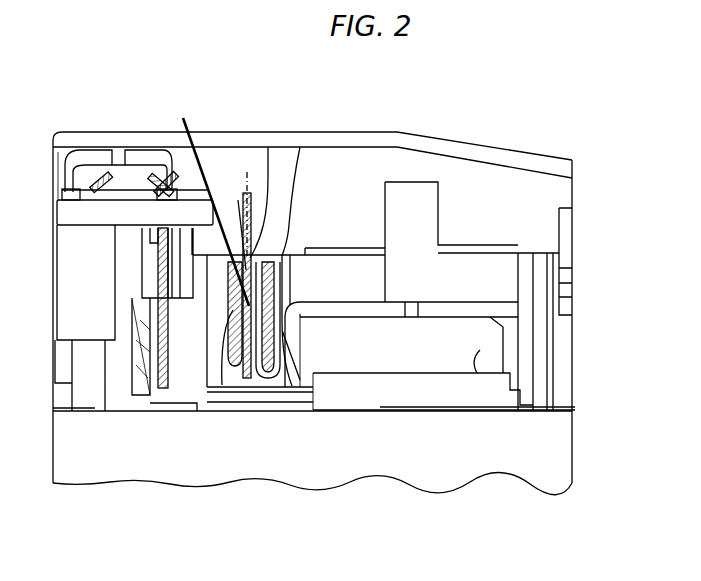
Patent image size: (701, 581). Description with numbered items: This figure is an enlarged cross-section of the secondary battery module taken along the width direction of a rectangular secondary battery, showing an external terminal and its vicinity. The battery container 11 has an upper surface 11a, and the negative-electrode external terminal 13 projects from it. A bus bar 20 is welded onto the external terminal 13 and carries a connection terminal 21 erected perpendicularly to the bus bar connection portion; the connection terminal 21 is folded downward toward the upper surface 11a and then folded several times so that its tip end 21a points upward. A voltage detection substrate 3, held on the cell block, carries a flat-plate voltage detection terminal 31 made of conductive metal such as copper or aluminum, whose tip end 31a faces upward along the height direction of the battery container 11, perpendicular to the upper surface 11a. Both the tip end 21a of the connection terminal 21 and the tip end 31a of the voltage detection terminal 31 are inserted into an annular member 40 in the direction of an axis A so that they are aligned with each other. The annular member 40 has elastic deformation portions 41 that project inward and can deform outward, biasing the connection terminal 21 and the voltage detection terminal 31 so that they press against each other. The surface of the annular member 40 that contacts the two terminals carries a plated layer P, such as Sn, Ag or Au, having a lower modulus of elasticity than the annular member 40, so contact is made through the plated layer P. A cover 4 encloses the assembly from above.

The voltage detection substrate 3 is at (80, 157).
The cover 4 is at (478, 146).
The battery container 11 is at (473, 471).
The upper surface of the battery container 11a is at (477, 375).
The negative-electrode external terminal 13 is at (375, 368).
The bus bar 20 is at (355, 297).
The connection terminal 21 is at (246, 380).
The tip end of the connection terminal 21a is at (268, 147).
The voltage detection terminal 31 is at (150, 405).
The tip end of the voltage detection terminal 31a is at (238, 200).
The annular member 40 is at (300, 147).
The elastic deformation portion 41 is at (210, 403).
The plated layer P is at (210, 202).
The axis A is at (246, 203).